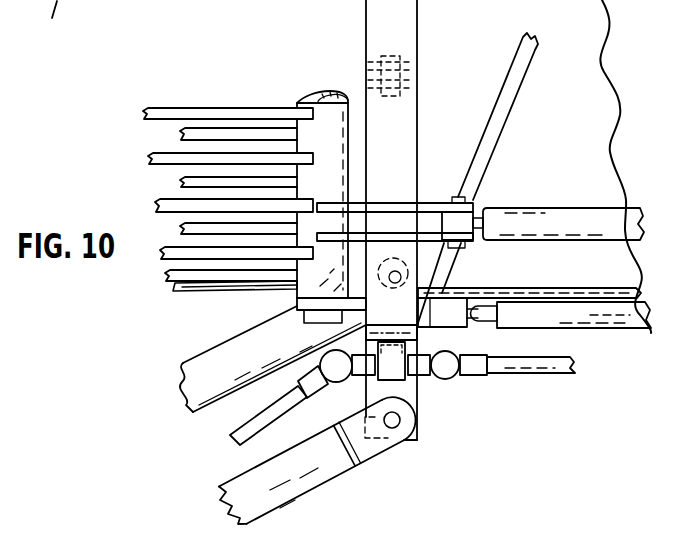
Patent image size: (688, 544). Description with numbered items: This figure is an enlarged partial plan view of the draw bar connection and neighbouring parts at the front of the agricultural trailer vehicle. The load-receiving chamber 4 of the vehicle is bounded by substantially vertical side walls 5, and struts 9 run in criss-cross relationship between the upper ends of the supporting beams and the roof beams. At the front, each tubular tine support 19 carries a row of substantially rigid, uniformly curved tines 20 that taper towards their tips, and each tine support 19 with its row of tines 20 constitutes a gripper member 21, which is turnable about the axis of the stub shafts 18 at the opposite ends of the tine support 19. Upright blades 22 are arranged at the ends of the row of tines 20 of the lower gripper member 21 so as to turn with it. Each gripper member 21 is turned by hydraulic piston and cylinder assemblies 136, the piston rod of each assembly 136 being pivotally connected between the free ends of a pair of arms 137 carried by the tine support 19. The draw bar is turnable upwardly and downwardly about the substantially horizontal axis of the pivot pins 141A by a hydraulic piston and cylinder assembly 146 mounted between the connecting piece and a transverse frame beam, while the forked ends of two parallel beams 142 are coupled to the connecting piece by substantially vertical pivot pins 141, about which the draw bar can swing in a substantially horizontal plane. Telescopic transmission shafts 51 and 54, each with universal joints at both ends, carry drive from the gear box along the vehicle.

The load-receiving chamber 4 is at (581, 43).
The side wall 5 is at (642, 289).
The strut 9 is at (493, 110).
The stub shaft 18 is at (322, 327).
The tine support 19 is at (299, 102).
The tine 20 is at (143, 172).
The gripper member 21 is at (183, 100).
The upright blade 22 is at (190, 286).
The telescopic transmission shaft 51 is at (240, 443).
The telescopic transmission shaft 54 is at (550, 377).
The hydraulic piston and cylinder assembly 136 is at (558, 207).
The arm 137 is at (398, 238).
The pivot pin 141 is at (410, 265).
The pivot pin 141A is at (397, 54).
The beam 142 is at (183, 362).
The hydraulic piston and cylinder assembly 146 is at (631, 329).